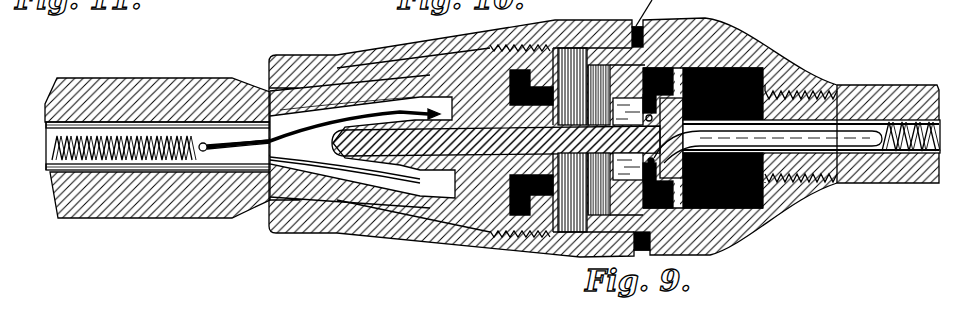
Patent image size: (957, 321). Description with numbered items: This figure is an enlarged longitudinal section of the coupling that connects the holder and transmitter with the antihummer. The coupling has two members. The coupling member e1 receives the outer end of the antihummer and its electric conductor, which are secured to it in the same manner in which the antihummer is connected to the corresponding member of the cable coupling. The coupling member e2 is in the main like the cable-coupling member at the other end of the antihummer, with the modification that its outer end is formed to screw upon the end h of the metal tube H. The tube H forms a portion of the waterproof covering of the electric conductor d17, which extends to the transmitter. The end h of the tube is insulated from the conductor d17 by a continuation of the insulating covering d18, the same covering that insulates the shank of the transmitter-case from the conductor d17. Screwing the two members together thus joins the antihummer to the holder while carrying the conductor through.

The coupling member e1 is at (445, 233).
The coupling member e2 is at (762, 216).
The end of the tube h is at (787, 107).
The electric conductor d17 is at (826, 137).
The insulating covering d18 is at (843, 116).
The metal tube H is at (880, 186).